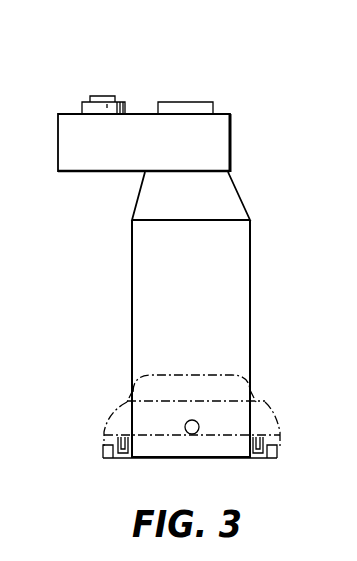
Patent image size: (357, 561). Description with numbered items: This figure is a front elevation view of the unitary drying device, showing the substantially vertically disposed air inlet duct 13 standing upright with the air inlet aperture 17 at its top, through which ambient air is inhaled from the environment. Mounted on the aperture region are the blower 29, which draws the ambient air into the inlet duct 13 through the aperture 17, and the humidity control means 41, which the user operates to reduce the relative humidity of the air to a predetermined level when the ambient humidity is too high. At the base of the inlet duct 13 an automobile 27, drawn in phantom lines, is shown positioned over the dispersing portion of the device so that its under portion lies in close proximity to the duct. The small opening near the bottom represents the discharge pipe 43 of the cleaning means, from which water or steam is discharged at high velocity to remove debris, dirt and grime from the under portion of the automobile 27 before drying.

The air inlet duct 13 is at (200, 305).
The air inlet aperture 17 is at (58, 135).
The blower 29 is at (100, 95).
The humidity control means 41 is at (187, 102).
The automobile 27 is at (260, 392).
The discharge pipe 43 is at (188, 433).